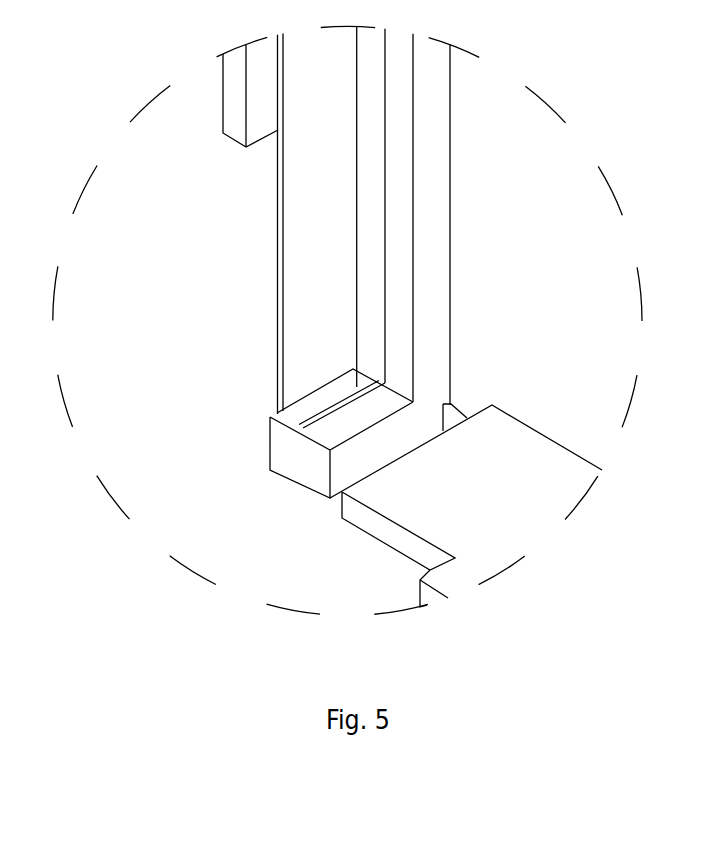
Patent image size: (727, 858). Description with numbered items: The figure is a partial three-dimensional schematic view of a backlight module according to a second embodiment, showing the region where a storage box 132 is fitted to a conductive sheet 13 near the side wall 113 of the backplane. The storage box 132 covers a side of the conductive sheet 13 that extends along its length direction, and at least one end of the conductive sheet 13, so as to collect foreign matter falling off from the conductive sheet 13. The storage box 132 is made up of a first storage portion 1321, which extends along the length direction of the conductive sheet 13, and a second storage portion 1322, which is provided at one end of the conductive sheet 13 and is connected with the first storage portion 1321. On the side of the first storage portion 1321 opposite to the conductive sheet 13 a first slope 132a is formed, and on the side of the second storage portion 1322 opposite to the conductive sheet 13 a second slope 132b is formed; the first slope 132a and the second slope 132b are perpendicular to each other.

The side wall 113 is at (235, 90).
The conductive sheet 13 is at (310, 297).
The first slope 132a is at (396, 265).
The second slope 132b is at (342, 425).
The storage box 132 is at (412, 266).
The first storage portion 1321 is at (423, 278).
The second storage portion 1322 is at (389, 410).